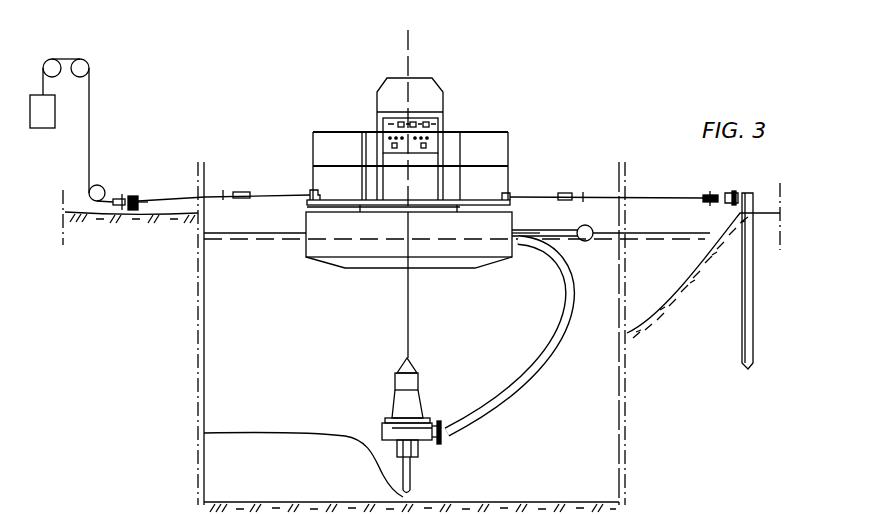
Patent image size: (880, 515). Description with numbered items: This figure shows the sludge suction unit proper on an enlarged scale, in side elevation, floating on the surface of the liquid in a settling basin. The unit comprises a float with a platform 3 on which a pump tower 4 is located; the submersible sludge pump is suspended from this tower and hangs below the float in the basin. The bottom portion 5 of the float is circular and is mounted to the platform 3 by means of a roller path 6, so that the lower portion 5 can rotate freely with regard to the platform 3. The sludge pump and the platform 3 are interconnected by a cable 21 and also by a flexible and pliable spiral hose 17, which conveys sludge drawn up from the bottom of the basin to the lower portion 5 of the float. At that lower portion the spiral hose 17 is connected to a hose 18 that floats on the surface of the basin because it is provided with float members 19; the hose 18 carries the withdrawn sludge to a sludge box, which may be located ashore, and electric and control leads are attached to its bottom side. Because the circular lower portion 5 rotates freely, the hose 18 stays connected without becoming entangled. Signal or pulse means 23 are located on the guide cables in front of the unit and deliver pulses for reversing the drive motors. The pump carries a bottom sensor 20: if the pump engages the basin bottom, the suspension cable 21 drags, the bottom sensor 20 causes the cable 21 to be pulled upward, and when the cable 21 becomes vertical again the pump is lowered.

The platform 3 is at (467, 200).
The pump tower 4 is at (443, 138).
The bottom portion of the float 5 is at (373, 213).
The roller path 6 is at (316, 257).
The spiral hose 17 is at (565, 350).
The hose 18 is at (551, 231).
The float members 19 is at (592, 225).
The bottom sensor 20 is at (413, 473).
The cable 21 is at (407, 317).
The pulse means 23 is at (243, 191).